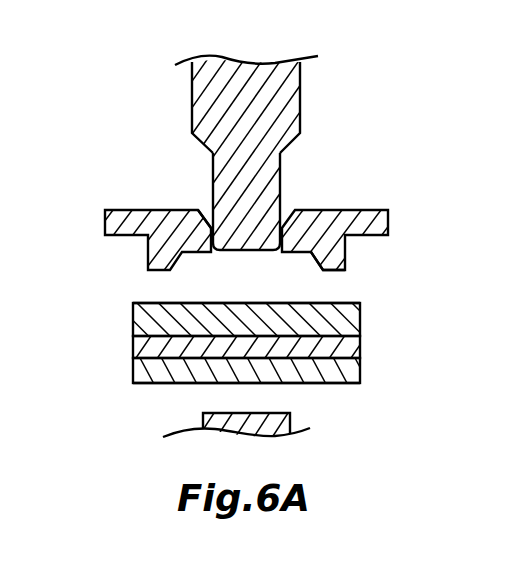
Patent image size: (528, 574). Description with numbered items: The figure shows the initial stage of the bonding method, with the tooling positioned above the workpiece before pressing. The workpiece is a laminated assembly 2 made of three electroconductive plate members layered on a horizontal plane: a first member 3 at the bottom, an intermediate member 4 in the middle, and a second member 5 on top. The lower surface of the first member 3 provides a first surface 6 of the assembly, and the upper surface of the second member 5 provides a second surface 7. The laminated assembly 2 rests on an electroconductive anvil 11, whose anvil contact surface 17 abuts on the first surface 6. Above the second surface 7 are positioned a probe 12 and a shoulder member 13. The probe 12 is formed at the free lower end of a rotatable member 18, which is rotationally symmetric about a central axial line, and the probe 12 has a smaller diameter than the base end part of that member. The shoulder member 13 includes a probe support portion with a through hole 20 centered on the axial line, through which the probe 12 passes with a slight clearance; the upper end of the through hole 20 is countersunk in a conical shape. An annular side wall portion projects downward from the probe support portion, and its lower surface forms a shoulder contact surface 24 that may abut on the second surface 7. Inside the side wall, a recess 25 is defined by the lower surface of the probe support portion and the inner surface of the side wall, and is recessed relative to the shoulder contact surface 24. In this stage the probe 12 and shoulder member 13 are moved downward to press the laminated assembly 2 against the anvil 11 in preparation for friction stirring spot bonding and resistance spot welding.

The rotatable member 18 is at (243, 153).
The probe 12 is at (282, 179).
The shoulder member 13 is at (329, 215).
The through hole 20 is at (207, 213).
The shoulder contact surface 24 is at (158, 232).
The recess 25 is at (307, 265).
The laminated assembly 2 is at (268, 352).
The second surface 7 is at (331, 303).
The second member 5 is at (338, 320).
The intermediate member 4 is at (340, 348).
The first member 3 is at (340, 370).
The first surface 6 is at (261, 405).
The anvil contact surface 17 is at (248, 434).
The anvil 11 is at (256, 432).